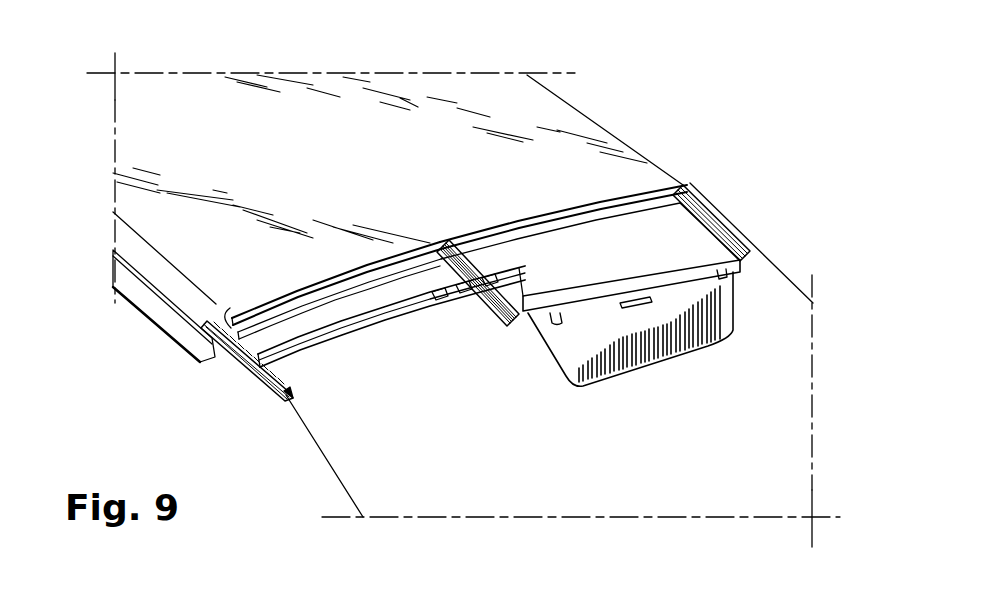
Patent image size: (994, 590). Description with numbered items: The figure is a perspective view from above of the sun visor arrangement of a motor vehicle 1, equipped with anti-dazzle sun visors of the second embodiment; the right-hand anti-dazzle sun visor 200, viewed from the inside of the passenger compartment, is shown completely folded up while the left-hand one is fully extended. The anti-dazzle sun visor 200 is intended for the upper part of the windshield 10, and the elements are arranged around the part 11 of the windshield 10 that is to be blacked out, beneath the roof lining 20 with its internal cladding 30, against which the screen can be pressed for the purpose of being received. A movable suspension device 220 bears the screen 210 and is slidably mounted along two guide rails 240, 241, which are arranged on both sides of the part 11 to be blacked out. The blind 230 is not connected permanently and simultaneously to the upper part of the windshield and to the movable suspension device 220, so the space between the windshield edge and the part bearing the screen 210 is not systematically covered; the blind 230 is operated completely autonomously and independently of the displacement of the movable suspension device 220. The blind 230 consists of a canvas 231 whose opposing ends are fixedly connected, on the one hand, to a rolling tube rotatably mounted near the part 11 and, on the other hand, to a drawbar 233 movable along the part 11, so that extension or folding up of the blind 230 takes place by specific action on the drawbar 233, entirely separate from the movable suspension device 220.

The vehicle 1 is at (200, 56).
The windshield 10 is at (333, 467).
The part to be blacked out 11 is at (356, 376).
The roof lining 20 is at (350, 135).
The internal cladding 30 is at (183, 333).
The anti-dazzle sun visor 200 is at (328, 303).
The screen 210 is at (744, 303).
The movable suspension device 220 is at (591, 275).
The blind 230 is at (641, 211).
The canvas 231 is at (678, 236).
The drawbar 233 is at (634, 208).
The guide rail 240 is at (456, 244).
The guide rail 241 is at (733, 213).